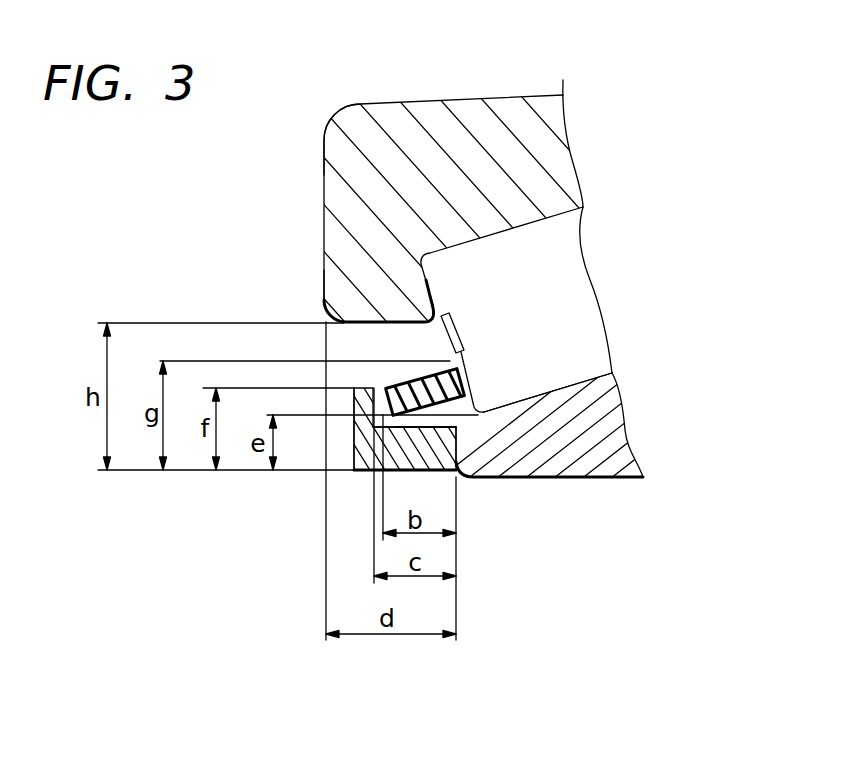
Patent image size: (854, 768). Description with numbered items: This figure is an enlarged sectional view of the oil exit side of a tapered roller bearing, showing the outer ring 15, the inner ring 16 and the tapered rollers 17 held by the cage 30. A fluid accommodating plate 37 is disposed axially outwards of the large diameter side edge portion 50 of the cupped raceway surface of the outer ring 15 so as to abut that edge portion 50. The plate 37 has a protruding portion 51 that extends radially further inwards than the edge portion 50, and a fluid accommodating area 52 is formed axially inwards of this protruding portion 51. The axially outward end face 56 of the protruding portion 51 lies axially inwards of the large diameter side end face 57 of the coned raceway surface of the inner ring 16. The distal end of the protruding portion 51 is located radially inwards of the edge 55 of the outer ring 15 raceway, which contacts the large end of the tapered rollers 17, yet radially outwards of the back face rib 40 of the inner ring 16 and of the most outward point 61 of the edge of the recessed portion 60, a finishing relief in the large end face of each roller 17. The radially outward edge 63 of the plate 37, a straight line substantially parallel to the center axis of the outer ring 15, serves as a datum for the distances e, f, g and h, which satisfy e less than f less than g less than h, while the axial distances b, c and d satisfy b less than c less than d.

The outer ring 15 is at (613, 437).
The inner ring 16 is at (557, 160).
The tapered rollers 17 is at (583, 318).
The cage 30 is at (404, 430).
The fluid accommodating plate 37 is at (362, 470).
The back face rib 40 is at (365, 300).
The large diameter side edge portion 50 is at (462, 430).
The protruding portion 51 is at (386, 388).
The fluid accommodating area 52 is at (443, 392).
The edge 55 is at (494, 409).
The axially outward end face 56 is at (354, 437).
The large diameter side end face 57 is at (326, 160).
The recessed portion 60 is at (435, 322).
The most outward point 61 is at (457, 344).
The radially outward edge 63 is at (138, 471).